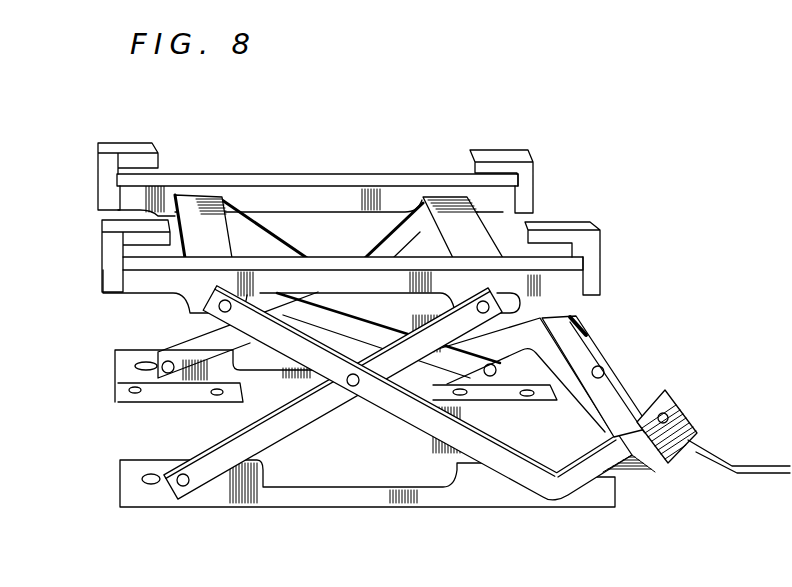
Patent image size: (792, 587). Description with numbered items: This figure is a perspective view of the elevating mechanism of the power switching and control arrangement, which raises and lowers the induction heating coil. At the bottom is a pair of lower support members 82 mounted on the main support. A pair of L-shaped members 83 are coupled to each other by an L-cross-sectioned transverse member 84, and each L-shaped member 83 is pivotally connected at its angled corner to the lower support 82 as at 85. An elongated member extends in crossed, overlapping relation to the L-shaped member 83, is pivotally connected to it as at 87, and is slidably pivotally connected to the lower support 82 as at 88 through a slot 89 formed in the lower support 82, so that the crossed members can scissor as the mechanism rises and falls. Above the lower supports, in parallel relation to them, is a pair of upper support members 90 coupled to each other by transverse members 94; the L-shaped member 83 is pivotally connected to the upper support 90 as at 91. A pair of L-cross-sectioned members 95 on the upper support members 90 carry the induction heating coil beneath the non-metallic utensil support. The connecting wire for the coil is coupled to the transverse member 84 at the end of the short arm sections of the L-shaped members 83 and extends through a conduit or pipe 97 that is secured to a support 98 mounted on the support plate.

The lower support member 82 is at (267, 382).
The L-shaped member 83 is at (363, 310).
The L-cross-sectioned transverse member 84 is at (588, 323).
The pivotal connection 85 is at (490, 378).
The pivotal connection 87 is at (353, 387).
The slidable pivotal connection 88 is at (175, 463).
The slot 89 is at (150, 372).
The upper support member 90 is at (303, 174).
The pivotal connection 91 is at (203, 316).
The transverse member 94 is at (196, 196).
The L-cross-sectioned member 95 is at (98, 162).
The conduit or pipe 97 is at (732, 465).
The support 98 is at (688, 397).